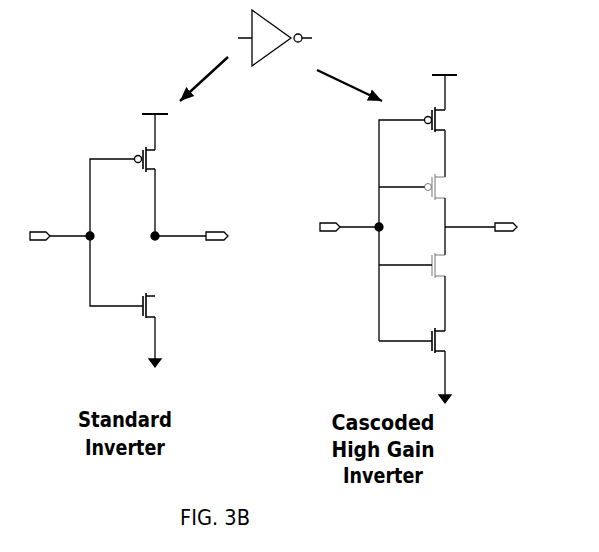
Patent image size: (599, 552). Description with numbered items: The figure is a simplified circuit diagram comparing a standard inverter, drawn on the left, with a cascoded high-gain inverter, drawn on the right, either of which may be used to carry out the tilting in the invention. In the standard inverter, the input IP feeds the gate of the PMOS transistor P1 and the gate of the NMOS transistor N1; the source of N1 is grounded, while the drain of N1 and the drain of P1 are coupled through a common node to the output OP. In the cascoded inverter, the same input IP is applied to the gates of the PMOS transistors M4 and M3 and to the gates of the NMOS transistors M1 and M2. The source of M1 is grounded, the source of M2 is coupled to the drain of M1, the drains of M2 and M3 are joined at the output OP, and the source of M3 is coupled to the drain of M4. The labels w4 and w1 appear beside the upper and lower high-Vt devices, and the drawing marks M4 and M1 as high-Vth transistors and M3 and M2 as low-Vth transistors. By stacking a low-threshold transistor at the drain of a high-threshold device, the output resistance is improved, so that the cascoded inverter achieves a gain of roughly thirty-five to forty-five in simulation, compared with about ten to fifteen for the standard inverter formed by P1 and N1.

The PMOS transistor P1 is at (165, 159).
The NMOS transistor N1 is at (167, 305).
The PMOS transistor M4 is at (480, 119).
The PMOS transistor M3 is at (478, 187).
The NMOS transistor M2 is at (479, 265).
The NMOS transistor M1 is at (484, 340).
The width of transistor M4 w4 is at (425, 157).
The width of transistor M1 w1 is at (430, 308).
The input IP is at (203, 222).
The output OP is at (354, 233).